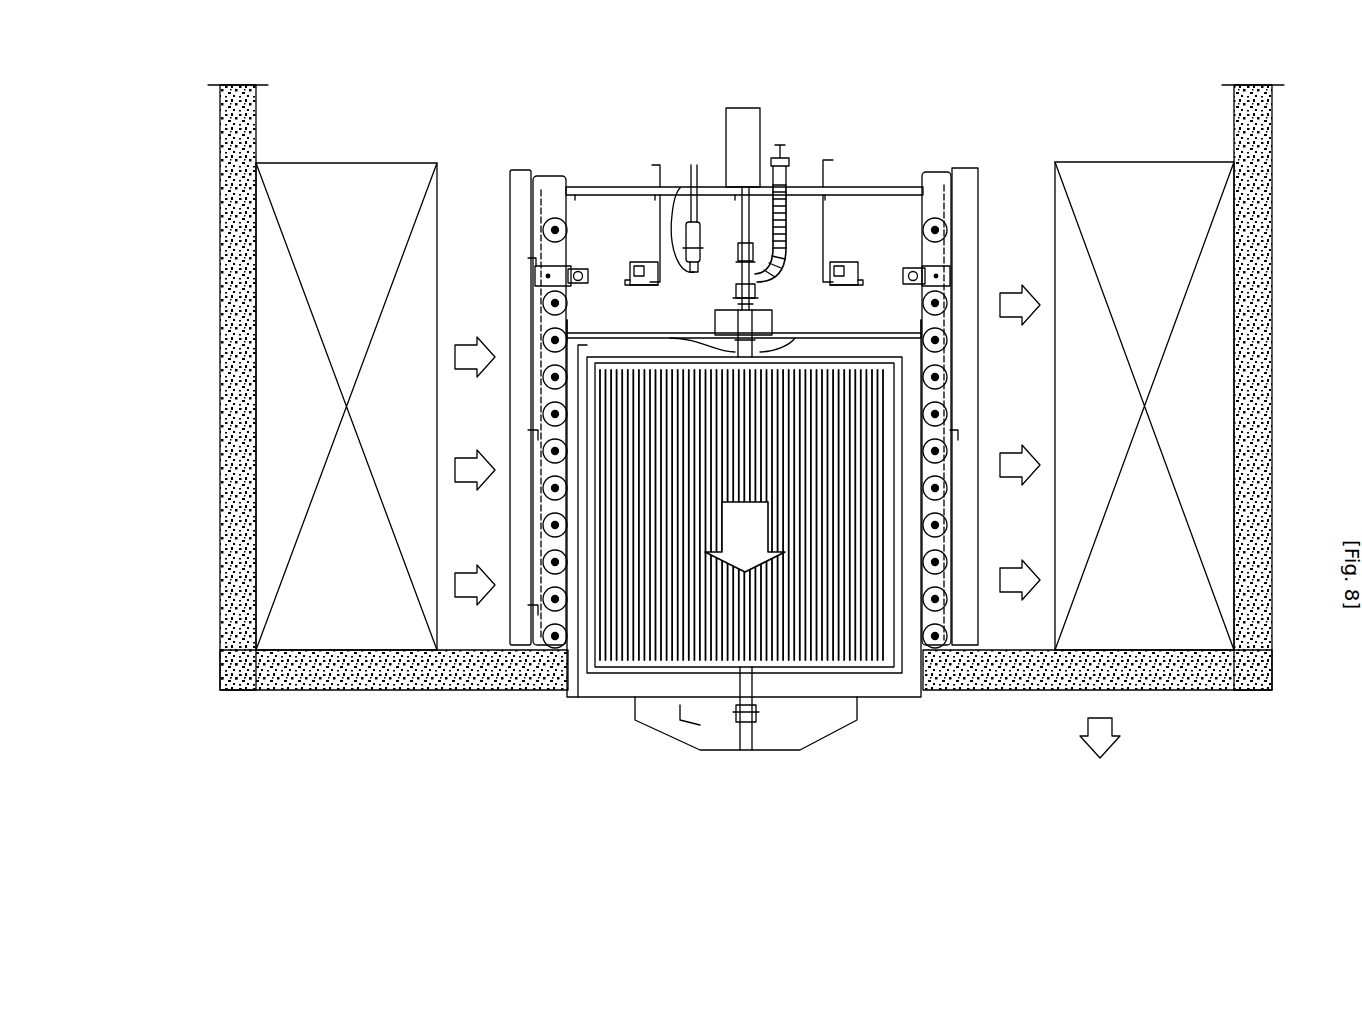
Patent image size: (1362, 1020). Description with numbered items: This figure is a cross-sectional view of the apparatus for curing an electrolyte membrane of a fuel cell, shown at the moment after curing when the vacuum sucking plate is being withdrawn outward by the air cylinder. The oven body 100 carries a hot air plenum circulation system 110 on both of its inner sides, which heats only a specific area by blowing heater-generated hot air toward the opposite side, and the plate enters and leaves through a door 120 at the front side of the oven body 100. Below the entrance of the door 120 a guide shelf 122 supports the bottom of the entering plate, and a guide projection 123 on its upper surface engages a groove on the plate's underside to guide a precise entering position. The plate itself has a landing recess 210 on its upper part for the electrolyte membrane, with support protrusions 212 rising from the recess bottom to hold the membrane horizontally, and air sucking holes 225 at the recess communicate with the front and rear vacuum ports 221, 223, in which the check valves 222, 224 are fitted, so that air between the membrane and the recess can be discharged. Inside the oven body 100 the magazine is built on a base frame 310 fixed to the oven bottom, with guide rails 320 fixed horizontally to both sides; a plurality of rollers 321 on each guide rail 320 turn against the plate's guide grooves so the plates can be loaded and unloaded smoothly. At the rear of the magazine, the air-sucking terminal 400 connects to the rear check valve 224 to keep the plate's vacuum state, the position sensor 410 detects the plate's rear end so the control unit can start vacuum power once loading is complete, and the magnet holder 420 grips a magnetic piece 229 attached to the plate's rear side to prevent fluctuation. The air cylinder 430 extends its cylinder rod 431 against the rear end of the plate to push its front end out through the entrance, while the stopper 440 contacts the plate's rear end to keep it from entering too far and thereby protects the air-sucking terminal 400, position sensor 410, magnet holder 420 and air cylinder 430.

The oven body 100 is at (215, 192).
The hot air plenum circulation system 110 is at (340, 185).
The door 120 is at (580, 690).
The guide shelf 122 is at (668, 727).
The guide projection 123 is at (727, 745).
The landing recess 210 is at (902, 673).
The support protrusions 212 is at (893, 670).
The vacuum port 221 is at (760, 722).
The check valve 222 is at (745, 752).
The vacuum port 223 is at (682, 340).
The check valve 224 is at (716, 312).
The air sucking holes 225 is at (778, 672).
The magnetic piece 229 is at (850, 340).
The base frame 310 is at (522, 170).
The guide rails 320 is at (548, 183).
The rollers 321 is at (543, 303).
The air-sucking terminal 400 is at (758, 302).
The position sensor 410 is at (690, 225).
The magnet holder 420 is at (640, 262).
The air cylinder 430 is at (755, 133).
The cylinder rod 431 is at (783, 205).
The stopper 440 is at (540, 274).